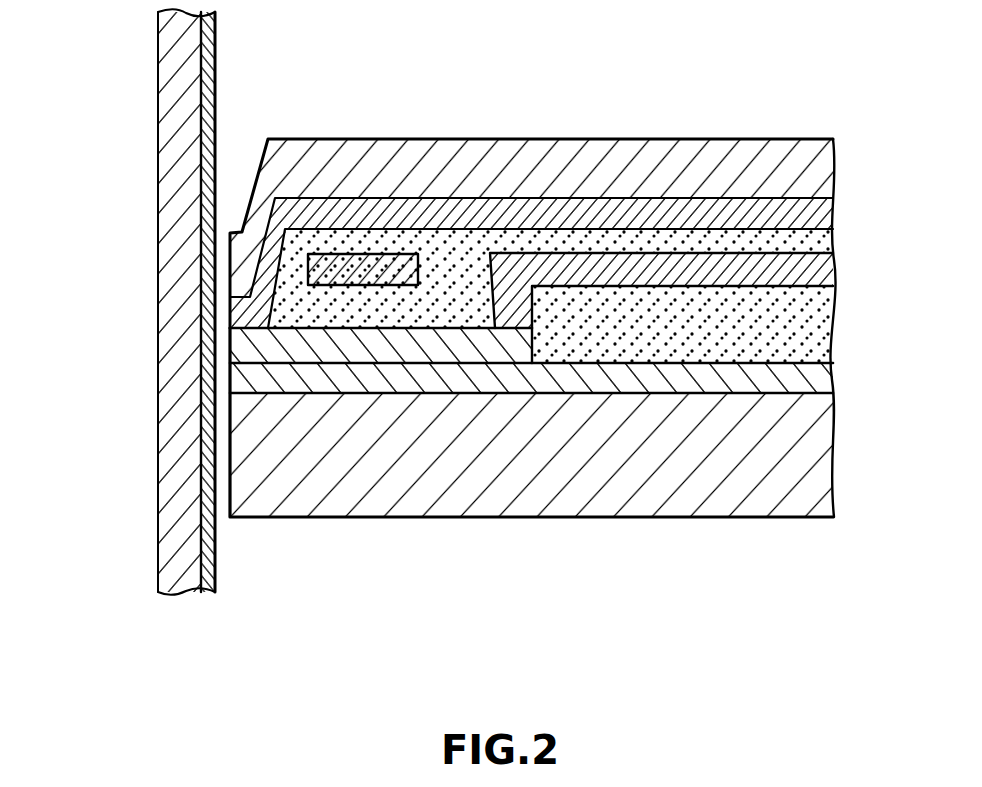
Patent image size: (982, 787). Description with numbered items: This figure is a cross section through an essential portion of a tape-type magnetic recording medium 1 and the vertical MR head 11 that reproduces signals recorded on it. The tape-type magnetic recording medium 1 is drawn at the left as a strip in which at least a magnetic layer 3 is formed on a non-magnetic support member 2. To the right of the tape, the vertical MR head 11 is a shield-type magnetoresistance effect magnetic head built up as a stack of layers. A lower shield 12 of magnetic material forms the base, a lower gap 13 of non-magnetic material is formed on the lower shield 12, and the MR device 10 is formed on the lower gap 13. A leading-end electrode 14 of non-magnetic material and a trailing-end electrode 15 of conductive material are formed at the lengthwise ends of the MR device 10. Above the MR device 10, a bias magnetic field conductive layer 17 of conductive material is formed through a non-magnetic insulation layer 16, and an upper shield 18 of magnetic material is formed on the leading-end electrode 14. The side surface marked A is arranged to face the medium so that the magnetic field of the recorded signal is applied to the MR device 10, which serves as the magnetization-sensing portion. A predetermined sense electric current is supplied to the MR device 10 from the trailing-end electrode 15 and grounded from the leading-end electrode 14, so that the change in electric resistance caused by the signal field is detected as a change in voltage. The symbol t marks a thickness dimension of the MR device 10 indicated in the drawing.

The tape-type magnetic recording medium 1 is at (95, 138).
The non-magnetic support member 2 is at (163, 116).
The magnetic layer 3 is at (208, 118).
The magnetoresistance effect device 10 is at (372, 348).
The vertical MR head 11 is at (761, 130).
The lower shield 12 is at (815, 486).
The lower gap 13 is at (817, 380).
The leading-end electrode 14 is at (822, 218).
The trailing-end electrode 15 is at (813, 276).
The non-magnetic insulation layer 16 is at (452, 275).
The bias magnetic field conductive layer 17 is at (382, 265).
The upper shield 18 is at (817, 177).
The side surface facing the medium A is at (230, 480).
The thickness of lower core layer t is at (226, 328).